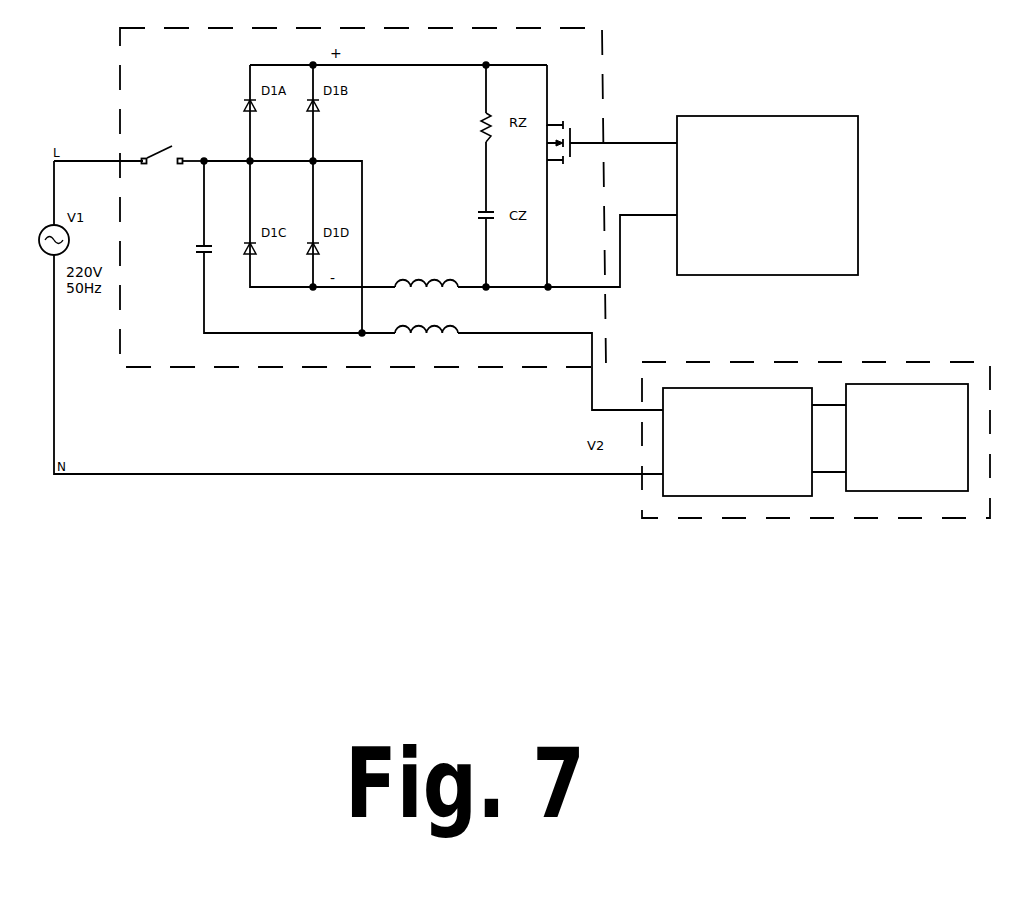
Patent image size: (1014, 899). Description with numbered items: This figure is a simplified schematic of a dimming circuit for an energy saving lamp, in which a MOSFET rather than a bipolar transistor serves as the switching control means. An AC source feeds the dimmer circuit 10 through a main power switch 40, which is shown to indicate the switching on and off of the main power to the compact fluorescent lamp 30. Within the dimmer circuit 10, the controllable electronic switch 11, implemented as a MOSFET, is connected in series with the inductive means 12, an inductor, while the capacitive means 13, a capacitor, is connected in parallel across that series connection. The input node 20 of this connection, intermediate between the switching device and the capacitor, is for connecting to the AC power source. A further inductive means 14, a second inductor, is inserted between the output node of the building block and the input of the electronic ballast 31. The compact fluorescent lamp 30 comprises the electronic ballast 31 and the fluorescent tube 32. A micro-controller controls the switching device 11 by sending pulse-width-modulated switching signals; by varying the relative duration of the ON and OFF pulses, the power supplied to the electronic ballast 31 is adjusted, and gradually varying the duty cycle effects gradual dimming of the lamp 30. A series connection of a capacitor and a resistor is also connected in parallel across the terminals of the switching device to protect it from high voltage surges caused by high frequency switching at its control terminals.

The dimmer circuit 10 is at (363, 183).
The controllable electronic switch 11 is at (603, 176).
The inductive means 12 is at (536, 251).
The capacitive means 13 is at (285, 247).
The inductor L2 14 is at (529, 356).
The input node 20 is at (767, 180).
The compact fluorescent lamp 30 is at (816, 425).
The electronic ballast 31 is at (754, 442).
The fluorescent tube 32 is at (907, 437).
The main power switch 40 is at (173, 158).